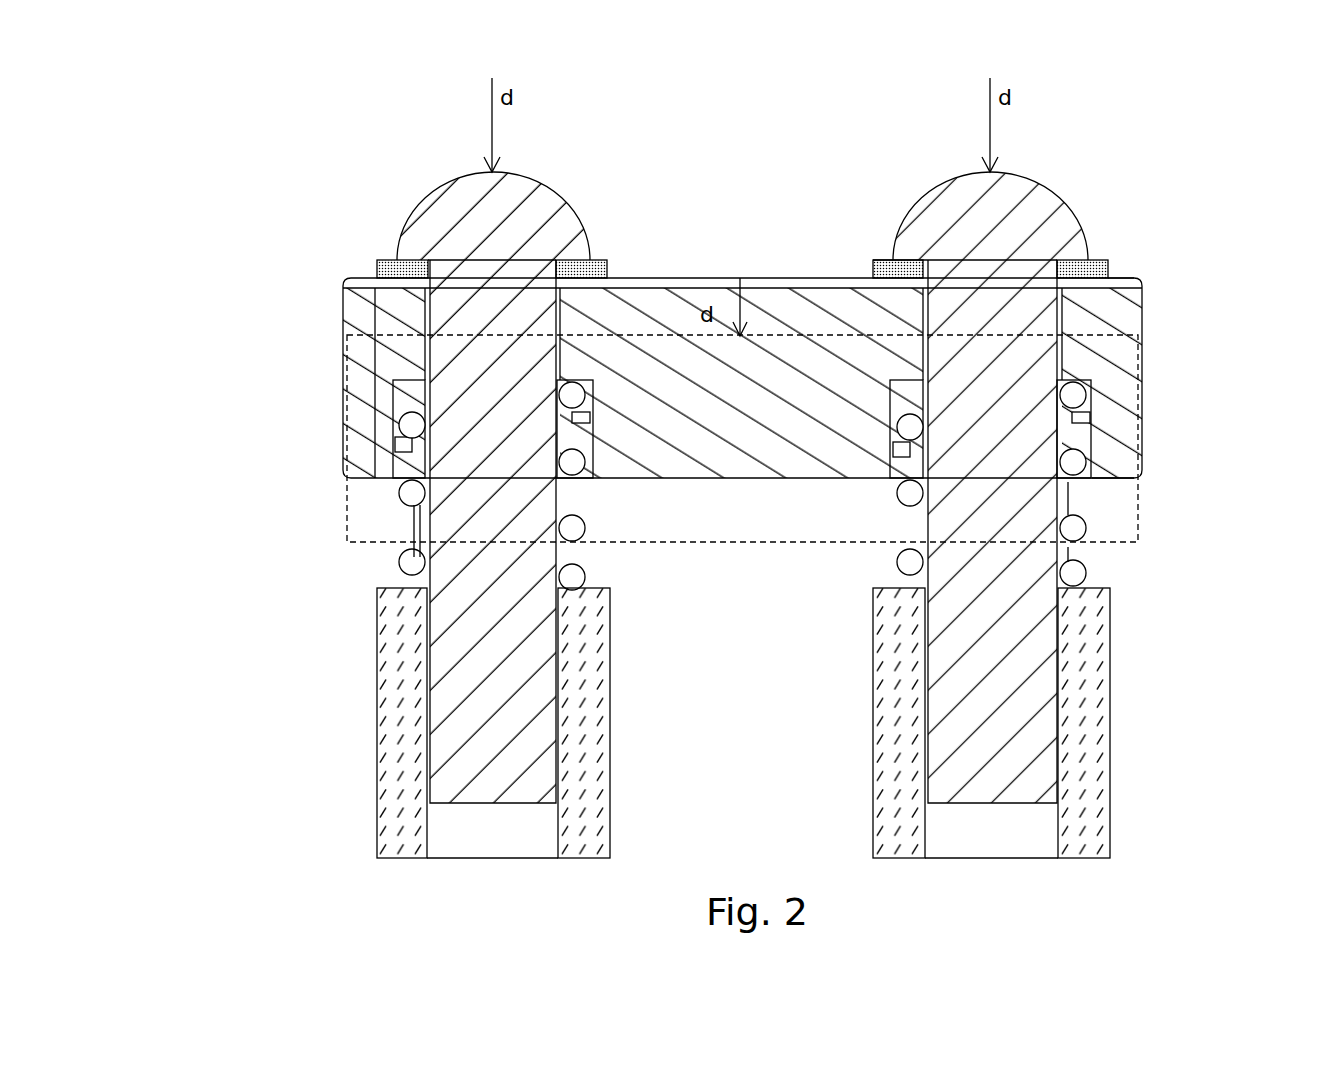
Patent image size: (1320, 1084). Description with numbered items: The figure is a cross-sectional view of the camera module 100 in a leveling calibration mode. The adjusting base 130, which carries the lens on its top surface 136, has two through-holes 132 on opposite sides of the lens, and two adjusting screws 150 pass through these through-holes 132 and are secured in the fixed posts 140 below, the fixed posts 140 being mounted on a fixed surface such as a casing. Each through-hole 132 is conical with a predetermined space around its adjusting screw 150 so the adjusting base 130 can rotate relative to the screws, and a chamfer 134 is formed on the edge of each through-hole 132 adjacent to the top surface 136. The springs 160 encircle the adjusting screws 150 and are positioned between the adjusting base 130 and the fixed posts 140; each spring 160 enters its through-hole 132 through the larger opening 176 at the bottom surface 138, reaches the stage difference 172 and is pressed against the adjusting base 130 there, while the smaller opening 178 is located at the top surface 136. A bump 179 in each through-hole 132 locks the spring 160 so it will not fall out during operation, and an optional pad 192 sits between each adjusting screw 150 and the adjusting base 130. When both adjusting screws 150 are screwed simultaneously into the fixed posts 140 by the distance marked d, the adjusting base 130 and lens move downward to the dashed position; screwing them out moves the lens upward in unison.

The camera module 100 is at (1310, 114).
The adjusting base 130 is at (1128, 313).
The through-holes 132 is at (187, 385).
The chamfer 134 is at (893, 262).
The top surface 136 is at (1125, 278).
The bottom surface 138 is at (1120, 483).
The fixed posts 140 is at (1098, 725).
The adjusting screws 150 is at (1043, 200).
The springs 160 is at (1080, 533).
The stage difference 172 is at (890, 413).
The opening 176 is at (888, 490).
The opening 178 is at (962, 291).
The bump 179 is at (1080, 421).
The pad 192 is at (873, 270).